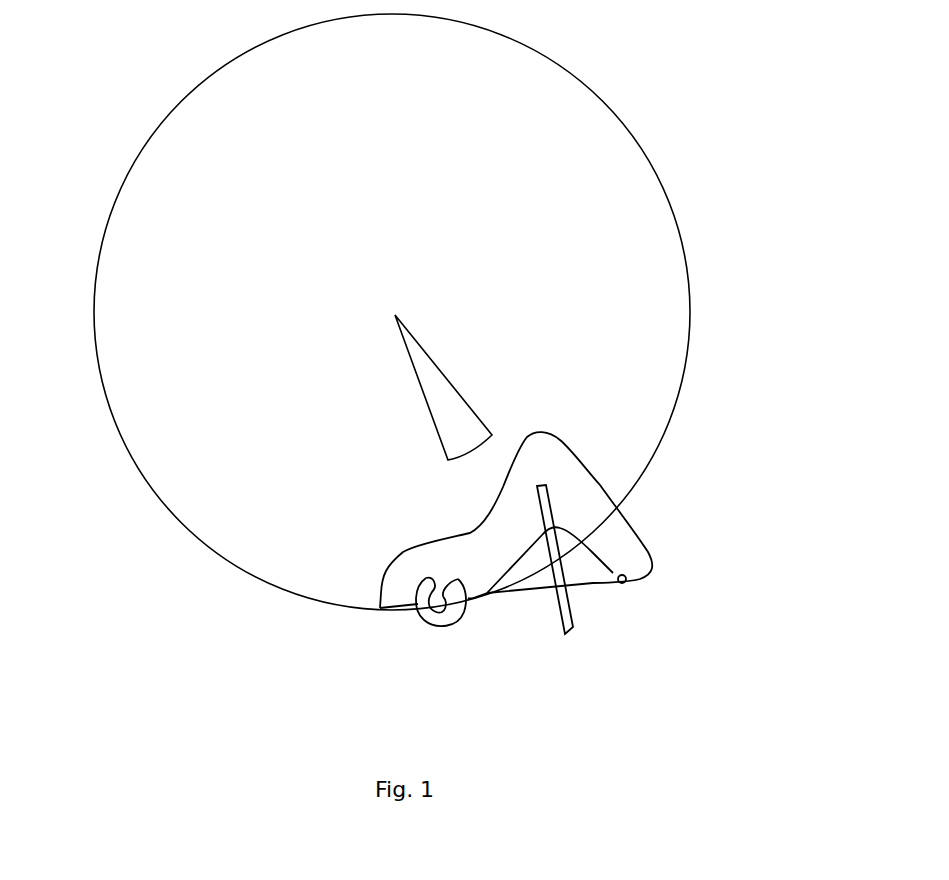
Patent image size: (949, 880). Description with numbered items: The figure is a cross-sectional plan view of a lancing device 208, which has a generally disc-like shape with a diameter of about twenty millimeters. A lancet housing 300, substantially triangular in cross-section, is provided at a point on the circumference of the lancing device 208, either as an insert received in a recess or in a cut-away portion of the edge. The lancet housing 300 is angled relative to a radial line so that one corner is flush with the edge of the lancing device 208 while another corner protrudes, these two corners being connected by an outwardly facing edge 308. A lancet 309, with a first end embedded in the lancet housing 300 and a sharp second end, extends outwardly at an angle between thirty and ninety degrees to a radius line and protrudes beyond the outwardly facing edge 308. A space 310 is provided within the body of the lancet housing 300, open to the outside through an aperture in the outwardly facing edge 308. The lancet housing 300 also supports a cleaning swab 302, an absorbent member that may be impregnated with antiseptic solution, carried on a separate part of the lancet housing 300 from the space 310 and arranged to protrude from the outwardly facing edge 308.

The lancing device 208 is at (820, 169).
The lancet housing 300 is at (622, 548).
The cleaning swab 302 is at (432, 612).
The outwardly facing edge 308 is at (597, 583).
The lancet 309 is at (570, 632).
The space 310 is at (540, 563).